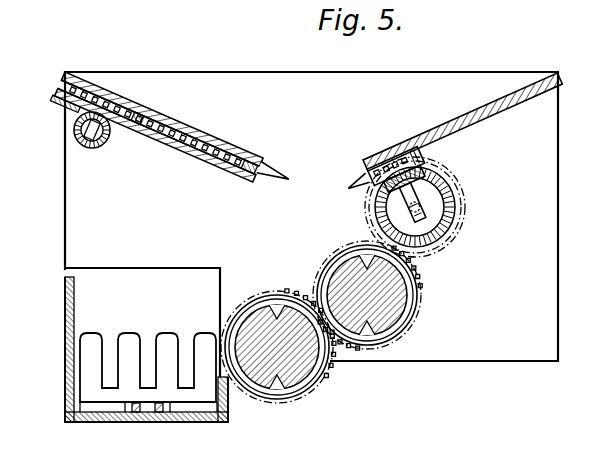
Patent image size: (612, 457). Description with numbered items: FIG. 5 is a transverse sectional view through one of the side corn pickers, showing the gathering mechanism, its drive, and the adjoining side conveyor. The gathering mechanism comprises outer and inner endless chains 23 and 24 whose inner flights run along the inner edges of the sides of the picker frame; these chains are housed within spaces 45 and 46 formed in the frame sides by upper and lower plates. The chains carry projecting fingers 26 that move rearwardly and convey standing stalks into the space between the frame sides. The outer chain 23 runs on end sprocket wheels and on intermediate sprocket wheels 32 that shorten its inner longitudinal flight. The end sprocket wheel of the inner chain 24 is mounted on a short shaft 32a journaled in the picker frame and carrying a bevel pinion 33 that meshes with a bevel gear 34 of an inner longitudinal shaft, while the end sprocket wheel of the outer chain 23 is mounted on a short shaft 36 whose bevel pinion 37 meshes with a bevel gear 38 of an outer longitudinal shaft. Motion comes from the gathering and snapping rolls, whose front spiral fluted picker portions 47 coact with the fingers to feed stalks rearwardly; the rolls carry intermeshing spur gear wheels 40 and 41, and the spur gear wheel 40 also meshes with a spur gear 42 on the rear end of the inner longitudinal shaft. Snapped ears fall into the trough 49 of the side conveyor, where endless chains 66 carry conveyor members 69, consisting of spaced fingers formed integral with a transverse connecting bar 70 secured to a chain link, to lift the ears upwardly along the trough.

The outer endless chain 23 is at (188, 126).
The inner endless chain 24 is at (360, 163).
The projecting fingers 26 is at (280, 180).
The intermediate sprocket wheels 32 is at (222, 168).
The short shaft 32a is at (425, 212).
The bevel pinion 33 is at (427, 165).
The bevel gear 34 is at (445, 230).
The short shaft 36 is at (74, 131).
The bevel pinion 37 is at (78, 107).
The bevel gear 38 is at (104, 144).
The spur gear wheel 40 is at (415, 262).
The spur gear wheel 41 is at (292, 292).
The spur gear 42 is at (443, 207).
The space 45 is at (382, 152).
The space 46 is at (238, 150).
The front spiral fluted picker portions 47 is at (410, 318).
The trough 49 is at (65, 371).
The endless chains 66 is at (148, 415).
The conveyor members 69 is at (168, 336).
The transverse connecting bar 70 is at (102, 397).